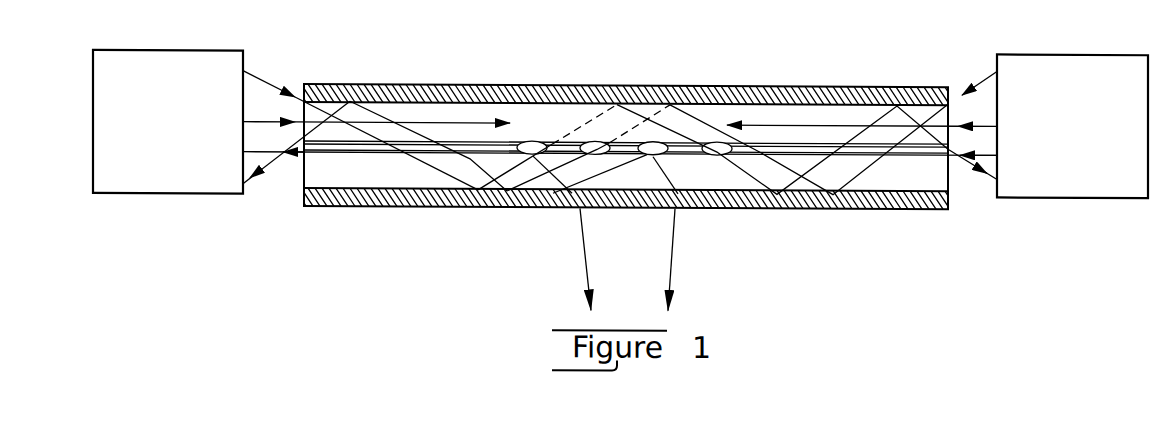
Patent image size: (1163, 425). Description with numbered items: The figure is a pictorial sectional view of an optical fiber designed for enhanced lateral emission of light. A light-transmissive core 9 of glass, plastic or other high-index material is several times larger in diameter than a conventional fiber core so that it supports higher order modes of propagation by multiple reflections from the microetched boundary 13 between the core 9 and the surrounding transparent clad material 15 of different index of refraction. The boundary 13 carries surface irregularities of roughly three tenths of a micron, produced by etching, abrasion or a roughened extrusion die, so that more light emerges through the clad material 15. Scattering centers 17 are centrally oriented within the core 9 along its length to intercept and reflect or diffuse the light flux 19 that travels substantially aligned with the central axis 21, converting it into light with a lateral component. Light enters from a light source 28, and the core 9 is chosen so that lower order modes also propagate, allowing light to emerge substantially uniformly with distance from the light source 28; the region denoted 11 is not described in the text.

The light-transmissive core 9 is at (945, 182).
The inner wall surface 11 is at (700, 118).
The microetched boundary 13 is at (483, 95).
The surface-cladding coating 15 is at (882, 91).
The scattering centers 17 is at (656, 155).
The light flux 19 is at (447, 121).
The central axis 21 is at (405, 150).
The light source 28 is at (202, 194).